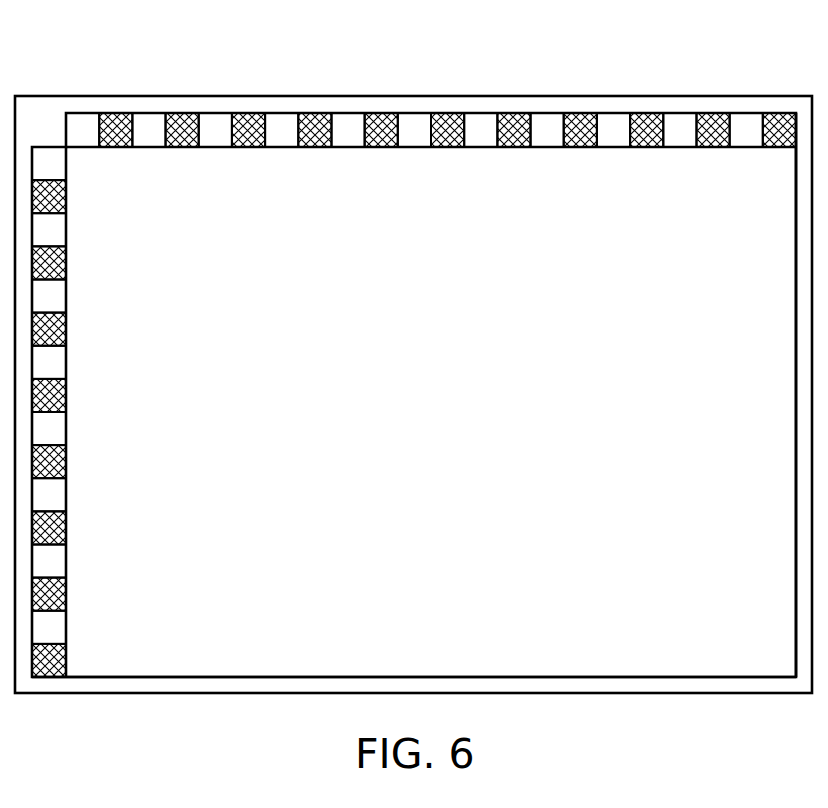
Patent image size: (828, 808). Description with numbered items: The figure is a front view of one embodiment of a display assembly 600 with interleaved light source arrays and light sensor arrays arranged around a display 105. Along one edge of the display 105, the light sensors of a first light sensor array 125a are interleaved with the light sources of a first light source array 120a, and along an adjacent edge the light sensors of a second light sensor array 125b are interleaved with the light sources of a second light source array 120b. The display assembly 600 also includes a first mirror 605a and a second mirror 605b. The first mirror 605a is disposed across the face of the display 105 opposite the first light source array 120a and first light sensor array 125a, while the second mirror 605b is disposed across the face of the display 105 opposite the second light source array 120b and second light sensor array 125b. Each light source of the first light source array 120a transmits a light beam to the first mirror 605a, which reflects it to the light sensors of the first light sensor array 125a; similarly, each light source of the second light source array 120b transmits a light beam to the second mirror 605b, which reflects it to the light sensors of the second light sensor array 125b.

The display assembly 600 is at (83, 71).
The display 105 is at (462, 427).
The first light source array 120a is at (67, 365).
The first light sensor array 125a is at (67, 457).
The second light source array 120b is at (419, 148).
The second light sensor array 125b is at (517, 148).
The first mirror 605a is at (796, 404).
The second mirror 605b is at (450, 676).